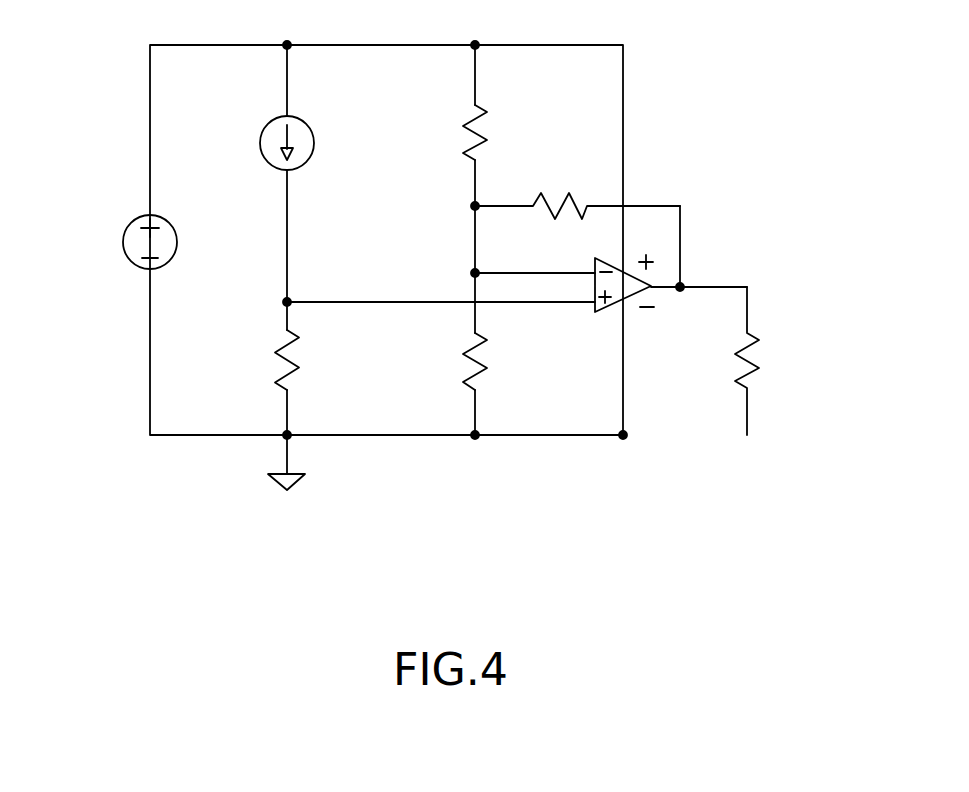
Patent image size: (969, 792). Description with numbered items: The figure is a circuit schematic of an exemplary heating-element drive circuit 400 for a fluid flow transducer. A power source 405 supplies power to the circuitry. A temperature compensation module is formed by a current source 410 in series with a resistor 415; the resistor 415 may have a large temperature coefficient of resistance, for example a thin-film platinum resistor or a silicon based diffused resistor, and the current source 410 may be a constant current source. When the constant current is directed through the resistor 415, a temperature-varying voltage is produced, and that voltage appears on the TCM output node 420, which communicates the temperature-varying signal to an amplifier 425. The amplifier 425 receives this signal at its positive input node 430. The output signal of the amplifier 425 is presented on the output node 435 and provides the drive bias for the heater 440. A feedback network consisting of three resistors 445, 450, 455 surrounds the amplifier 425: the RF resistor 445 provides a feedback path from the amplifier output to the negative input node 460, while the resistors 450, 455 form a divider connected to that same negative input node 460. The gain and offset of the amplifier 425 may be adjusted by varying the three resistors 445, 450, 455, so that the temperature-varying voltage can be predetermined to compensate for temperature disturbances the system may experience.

The heating-element drive circuit 400 is at (225, 528).
The power source 405 is at (125, 252).
The current source 410 is at (263, 137).
The resistor 415 is at (284, 352).
The TCM output node 420 is at (337, 300).
The amplifier 425 is at (627, 306).
The positive input node 430 is at (555, 305).
The output node 435 is at (712, 287).
The heater 440 is at (757, 372).
The RF resistor 445 is at (590, 205).
The resistor 450 is at (470, 148).
The resistor 455 is at (473, 382).
The negative input node 460 is at (573, 272).